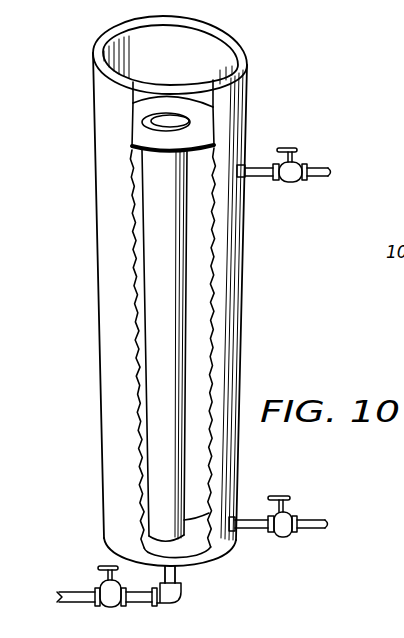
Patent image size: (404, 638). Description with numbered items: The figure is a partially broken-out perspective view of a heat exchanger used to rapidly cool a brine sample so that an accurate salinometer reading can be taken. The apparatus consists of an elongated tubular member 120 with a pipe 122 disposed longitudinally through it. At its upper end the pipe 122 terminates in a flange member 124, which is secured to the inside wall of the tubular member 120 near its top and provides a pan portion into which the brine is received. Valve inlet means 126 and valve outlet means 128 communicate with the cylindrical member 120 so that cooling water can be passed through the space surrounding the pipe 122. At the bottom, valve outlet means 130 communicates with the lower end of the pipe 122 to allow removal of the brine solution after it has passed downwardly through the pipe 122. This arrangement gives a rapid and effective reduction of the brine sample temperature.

The elongated tubular member 120 is at (237, 232).
The pipe 122 is at (152, 318).
The flange member 124 is at (188, 136).
The valve inlet means 126 is at (308, 164).
The valve outlet means 128 is at (288, 514).
The valve outlet means 130 is at (100, 582).